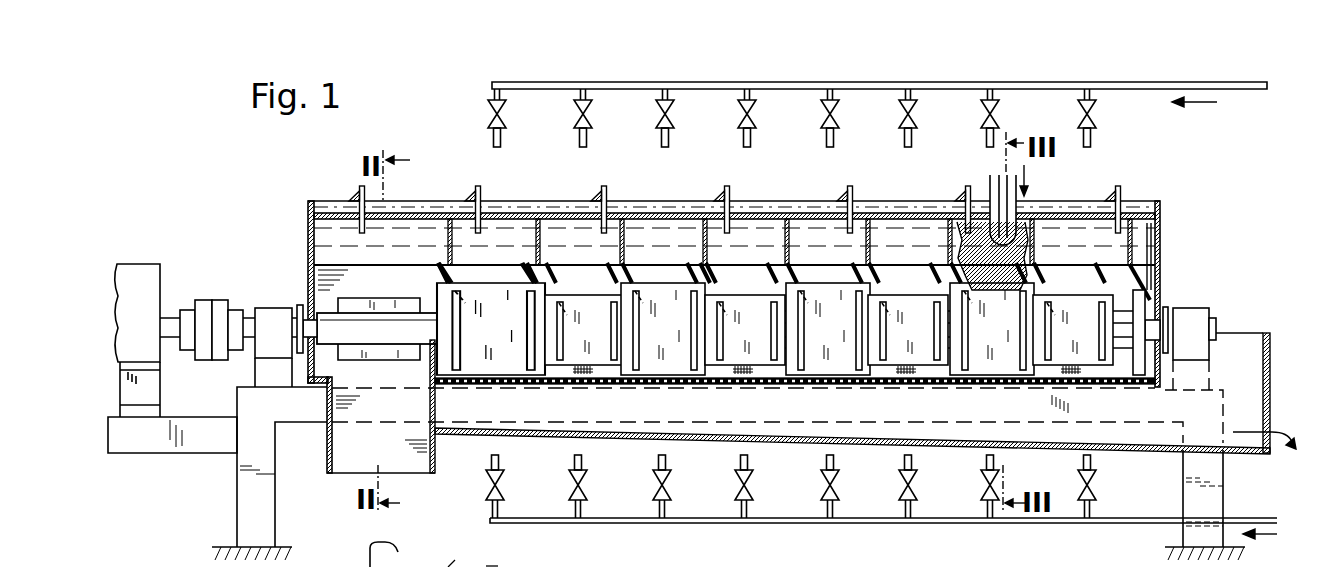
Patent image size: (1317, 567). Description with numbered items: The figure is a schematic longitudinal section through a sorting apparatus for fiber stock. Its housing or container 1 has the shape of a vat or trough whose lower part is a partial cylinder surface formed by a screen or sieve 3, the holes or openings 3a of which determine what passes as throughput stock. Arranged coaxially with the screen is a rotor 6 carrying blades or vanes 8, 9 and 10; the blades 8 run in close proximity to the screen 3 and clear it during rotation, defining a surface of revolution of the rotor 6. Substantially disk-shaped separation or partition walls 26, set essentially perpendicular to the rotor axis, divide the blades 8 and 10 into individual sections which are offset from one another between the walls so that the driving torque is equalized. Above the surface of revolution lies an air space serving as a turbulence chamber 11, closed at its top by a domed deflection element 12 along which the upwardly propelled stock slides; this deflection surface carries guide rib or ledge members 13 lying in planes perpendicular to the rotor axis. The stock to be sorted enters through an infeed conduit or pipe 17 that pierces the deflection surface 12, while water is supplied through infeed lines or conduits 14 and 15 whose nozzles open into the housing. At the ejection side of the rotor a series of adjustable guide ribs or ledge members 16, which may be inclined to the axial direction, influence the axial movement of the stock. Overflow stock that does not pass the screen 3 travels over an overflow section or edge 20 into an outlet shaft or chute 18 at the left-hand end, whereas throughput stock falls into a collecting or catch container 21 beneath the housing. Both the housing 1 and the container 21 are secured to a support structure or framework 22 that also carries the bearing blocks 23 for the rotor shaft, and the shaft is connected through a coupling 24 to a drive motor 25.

The housing or container 1 is at (898, 280).
The screen or sieve 3 is at (886, 376).
The holes or openings of the screen 3a is at (660, 384).
The rotor 6 is at (390, 312).
The blades or vanes 8 is at (1008, 372).
The blades or vanes 9 is at (350, 308).
The blades or vanes 10 is at (497, 562).
The turbulence chamber 11 is at (448, 566).
The deflection element 12 is at (567, 250).
The guide rib or ledge members 13 is at (632, 252).
The infeed line or conduit 14 is at (686, 132).
The infeed line or conduit 15 is at (679, 457).
The adjustable guide ribs or ledge members 16 is at (702, 272).
The infeed conduit or pipe 17 is at (1000, 192).
The outlet shaft or chute 18 is at (416, 468).
The overflow section or edge 20 is at (430, 345).
The collecting or catch container 21 is at (1240, 345).
The support structure or framework 22 is at (1217, 470).
The bearing blocks 23 is at (264, 312).
The coupling 24 is at (204, 312).
The drive motor 25 is at (138, 272).
The separation or partition walls 26 is at (546, 357).